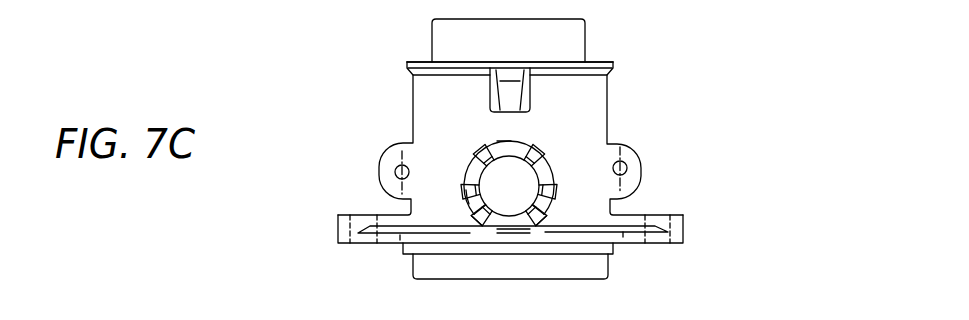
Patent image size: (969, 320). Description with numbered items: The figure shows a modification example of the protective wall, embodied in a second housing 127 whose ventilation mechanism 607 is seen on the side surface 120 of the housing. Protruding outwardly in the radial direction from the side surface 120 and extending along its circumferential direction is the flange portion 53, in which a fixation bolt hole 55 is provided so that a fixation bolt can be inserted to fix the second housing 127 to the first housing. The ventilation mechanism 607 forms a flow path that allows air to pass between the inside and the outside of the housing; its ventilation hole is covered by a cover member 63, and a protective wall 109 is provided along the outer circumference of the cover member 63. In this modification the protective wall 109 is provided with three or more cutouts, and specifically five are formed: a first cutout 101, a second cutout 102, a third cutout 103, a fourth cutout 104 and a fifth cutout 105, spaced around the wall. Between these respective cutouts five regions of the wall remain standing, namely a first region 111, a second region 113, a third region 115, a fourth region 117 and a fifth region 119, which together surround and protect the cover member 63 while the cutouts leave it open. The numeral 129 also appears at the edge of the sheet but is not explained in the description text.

The side surface 120 is at (568, 88).
The ventilation mechanism 607 is at (562, 130).
The flange portion 53 is at (338, 228).
The fixation bolt hole 55 is at (367, 246).
The first cutout 101 is at (492, 222).
The cover member 63 is at (517, 204).
The third region 115 is at (502, 141).
The third cutout 103 is at (474, 151).
The fourth cutout 104 is at (548, 147).
The second region 113 is at (465, 172).
The fourth region 117 is at (556, 170).
The second cutout 102 is at (466, 196).
The first region 111 is at (472, 216).
The protective wall 109 is at (465, 220).
The fifth region 119 is at (547, 219).
The fifth cutout 105 is at (550, 206).
The second housing 127 is at (672, 46).
The adjacent element 129 is at (735, 314).